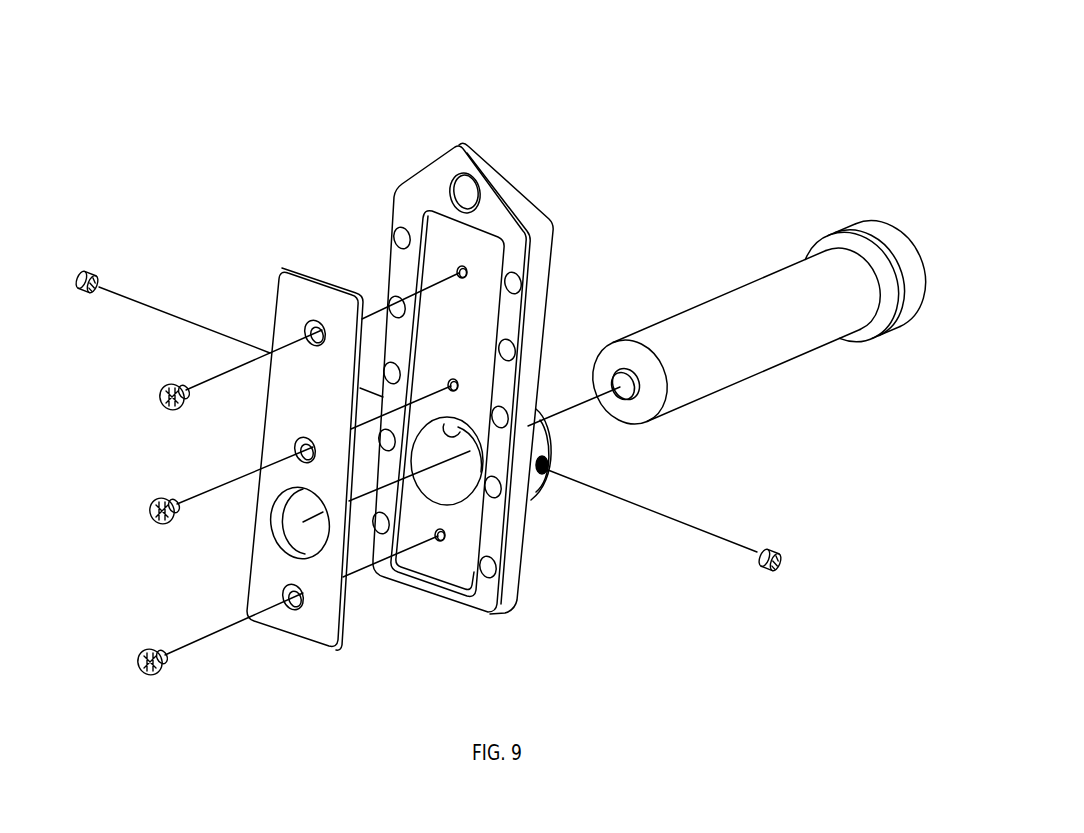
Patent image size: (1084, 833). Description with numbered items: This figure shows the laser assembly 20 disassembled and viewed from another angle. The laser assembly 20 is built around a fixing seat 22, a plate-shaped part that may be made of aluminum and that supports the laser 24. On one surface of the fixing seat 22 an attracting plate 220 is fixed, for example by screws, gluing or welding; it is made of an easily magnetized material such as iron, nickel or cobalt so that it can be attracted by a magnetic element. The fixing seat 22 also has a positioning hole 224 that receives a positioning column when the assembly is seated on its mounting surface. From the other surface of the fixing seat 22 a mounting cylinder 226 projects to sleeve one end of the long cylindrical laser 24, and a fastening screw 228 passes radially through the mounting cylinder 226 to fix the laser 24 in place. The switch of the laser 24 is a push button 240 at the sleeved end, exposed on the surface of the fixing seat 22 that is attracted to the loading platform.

The laser assembly 20 is at (750, 66).
The fixing seat 22 is at (423, 182).
The attracting plate 220 is at (297, 295).
The positioning hole 224 is at (466, 192).
The mounting cylinder 226 is at (547, 443).
The fastening screw 228 is at (767, 547).
The laser 24 is at (773, 307).
The push button 240 is at (622, 367).